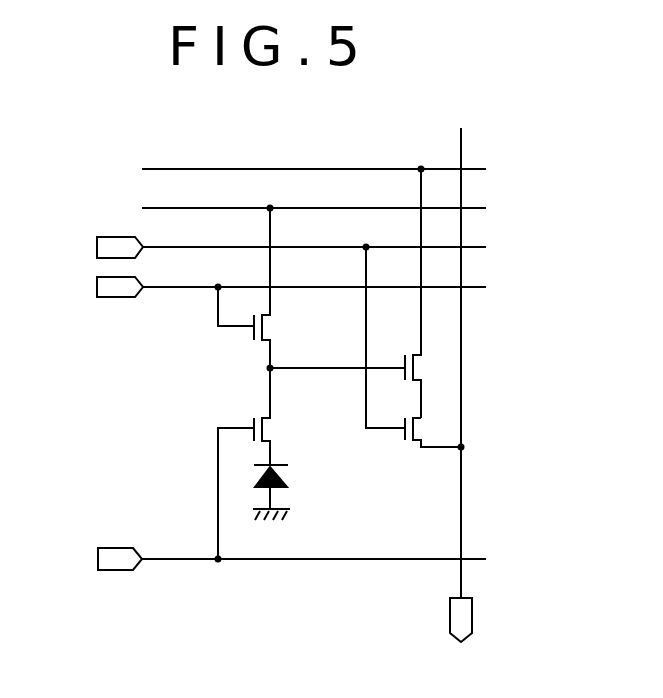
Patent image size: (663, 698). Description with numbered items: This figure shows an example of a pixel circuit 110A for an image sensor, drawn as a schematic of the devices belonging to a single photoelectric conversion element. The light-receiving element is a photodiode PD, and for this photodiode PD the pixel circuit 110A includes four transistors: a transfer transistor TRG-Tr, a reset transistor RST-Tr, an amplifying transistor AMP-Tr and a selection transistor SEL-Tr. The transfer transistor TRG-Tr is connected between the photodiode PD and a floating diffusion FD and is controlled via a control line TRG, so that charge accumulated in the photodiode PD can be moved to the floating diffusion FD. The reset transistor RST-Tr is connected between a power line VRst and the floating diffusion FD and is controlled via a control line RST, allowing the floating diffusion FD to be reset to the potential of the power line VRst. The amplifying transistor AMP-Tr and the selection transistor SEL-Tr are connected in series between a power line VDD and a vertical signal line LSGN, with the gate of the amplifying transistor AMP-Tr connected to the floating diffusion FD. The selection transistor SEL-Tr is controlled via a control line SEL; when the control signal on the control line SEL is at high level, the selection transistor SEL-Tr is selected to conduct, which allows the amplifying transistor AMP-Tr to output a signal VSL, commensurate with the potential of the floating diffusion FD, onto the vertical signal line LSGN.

The pixel circuit 110A is at (257, 632).
The power line VDD is at (314, 156).
The power line VRst is at (314, 194).
The control line SEL is at (261, 330).
The control line RST is at (256, 299).
The control line TRG is at (261, 501).
The reset transistor RST-Tr is at (252, 340).
The transfer transistor TRG-Tr is at (252, 437).
The amplifying transistor AMP-Tr is at (423, 368).
The selection transistor SEL-Tr is at (423, 428).
The floating diffusion FD is at (336, 356).
The photodiode PD is at (290, 492).
The vertical signal line LSGN is at (463, 517).
The signal VSL is at (461, 637).